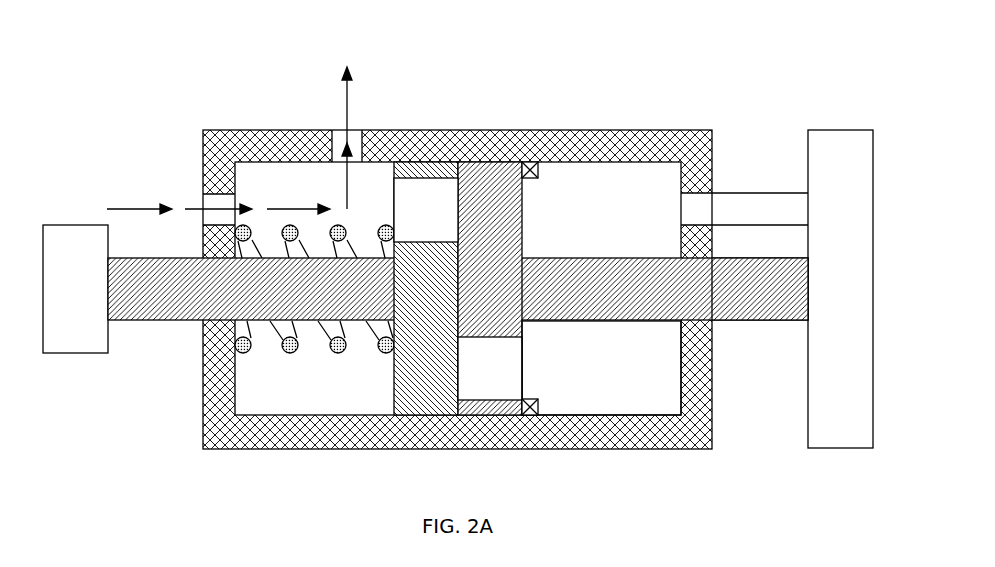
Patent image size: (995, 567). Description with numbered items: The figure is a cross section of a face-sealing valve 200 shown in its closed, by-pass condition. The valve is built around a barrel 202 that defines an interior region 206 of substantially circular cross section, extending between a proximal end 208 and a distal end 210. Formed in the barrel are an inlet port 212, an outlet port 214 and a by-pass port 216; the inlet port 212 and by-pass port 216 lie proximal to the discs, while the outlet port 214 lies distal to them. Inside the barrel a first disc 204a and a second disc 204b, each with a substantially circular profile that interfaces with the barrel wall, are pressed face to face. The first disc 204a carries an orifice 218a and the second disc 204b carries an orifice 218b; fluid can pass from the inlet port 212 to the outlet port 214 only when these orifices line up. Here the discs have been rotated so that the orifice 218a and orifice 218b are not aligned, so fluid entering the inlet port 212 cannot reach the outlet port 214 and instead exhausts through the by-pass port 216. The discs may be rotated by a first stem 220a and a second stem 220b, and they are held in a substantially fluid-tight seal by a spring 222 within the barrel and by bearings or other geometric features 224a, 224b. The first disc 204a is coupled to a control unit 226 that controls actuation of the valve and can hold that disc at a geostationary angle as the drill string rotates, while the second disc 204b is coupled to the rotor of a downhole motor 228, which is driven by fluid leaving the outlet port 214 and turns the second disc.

The face-sealing valve 200 is at (783, 59).
The barrel 202 is at (613, 130).
The first disc 204a is at (394, 400).
The second disc 204b is at (522, 237).
The interior region 206 is at (673, 409).
The proximal end 208 is at (162, 489).
The distal end 210 is at (753, 488).
The inlet port 212 is at (195, 191).
The outlet port 214 is at (720, 185).
The by-pass port 216 is at (364, 123).
The orifice of first disc 218a is at (450, 222).
The orifice of second disc 218b is at (513, 376).
The first stem 220a is at (133, 321).
The second stem 220b is at (740, 321).
The spring 222 is at (247, 353).
The bearing or geometric feature 224a is at (539, 168).
The bearing or geometric feature 224b is at (538, 410).
The control unit 226 is at (93, 299).
The downhole motor 228 is at (857, 299).